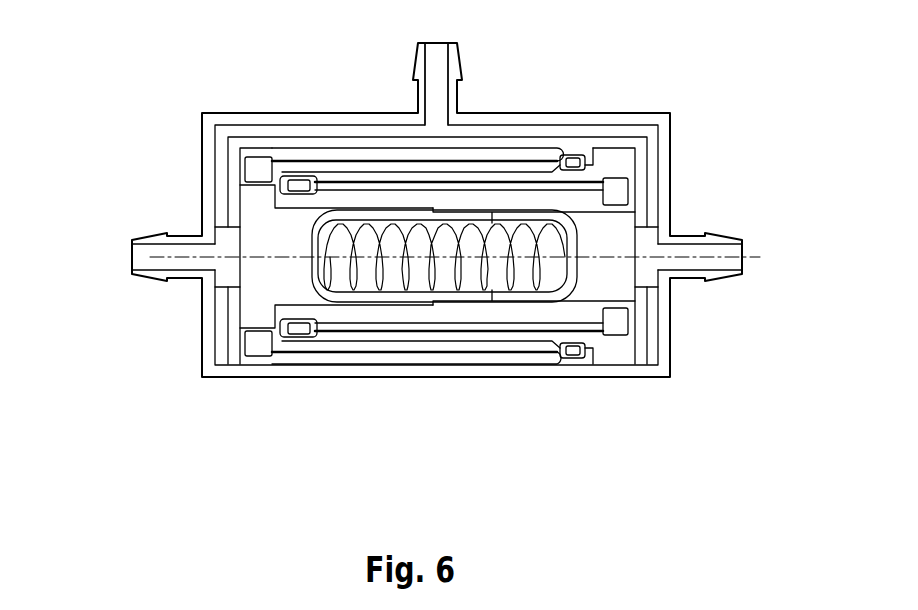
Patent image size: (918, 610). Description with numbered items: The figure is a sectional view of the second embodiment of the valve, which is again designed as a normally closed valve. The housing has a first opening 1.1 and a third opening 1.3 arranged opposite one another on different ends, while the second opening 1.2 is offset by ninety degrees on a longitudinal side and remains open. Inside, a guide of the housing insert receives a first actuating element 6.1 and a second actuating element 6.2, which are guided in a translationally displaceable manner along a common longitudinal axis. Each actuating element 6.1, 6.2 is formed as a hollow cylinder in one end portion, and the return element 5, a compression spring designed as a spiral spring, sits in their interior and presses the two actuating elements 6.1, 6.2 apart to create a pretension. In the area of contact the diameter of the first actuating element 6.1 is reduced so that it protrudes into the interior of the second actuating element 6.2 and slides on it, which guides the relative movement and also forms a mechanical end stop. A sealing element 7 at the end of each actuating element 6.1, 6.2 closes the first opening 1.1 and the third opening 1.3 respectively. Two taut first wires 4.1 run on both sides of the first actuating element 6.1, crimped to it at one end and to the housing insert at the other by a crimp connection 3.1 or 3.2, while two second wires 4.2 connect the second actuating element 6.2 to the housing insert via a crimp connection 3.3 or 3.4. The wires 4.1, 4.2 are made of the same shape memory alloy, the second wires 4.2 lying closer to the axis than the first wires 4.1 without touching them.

The first opening 1.1 is at (133, 257).
The second opening 1.2 is at (440, 78).
The third opening 1.3 is at (742, 257).
The crimp connection 3.1 is at (573, 162).
The crimp connection 3.2 is at (575, 358).
The crimp connection 3.3 is at (282, 178).
The crimp connection 3.4 is at (293, 337).
The first wire 4.1 is at (352, 160).
The second wire 4.2 is at (462, 343).
The return element 5 is at (385, 293).
The first actuating element 6.1 is at (272, 262).
The second actuating element 6.2 is at (585, 292).
The sealing element 7 is at (645, 250).